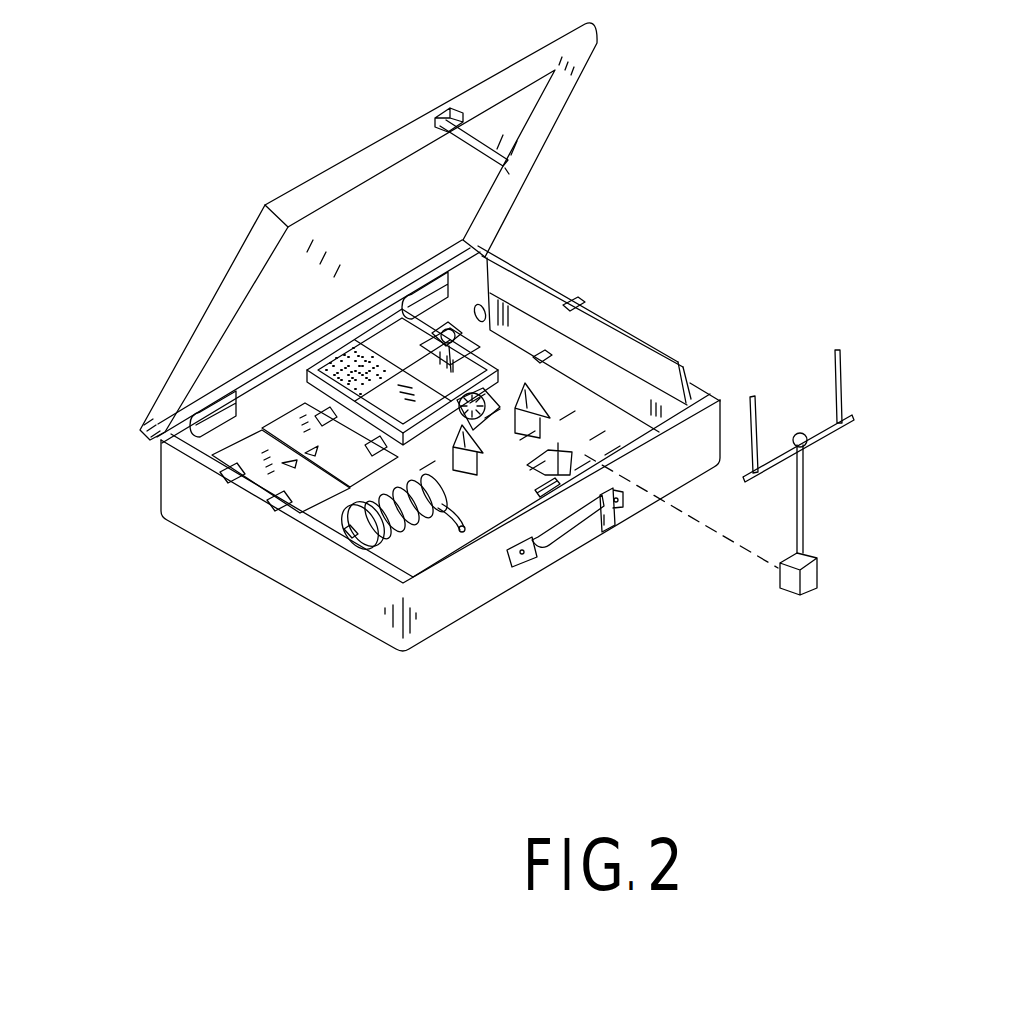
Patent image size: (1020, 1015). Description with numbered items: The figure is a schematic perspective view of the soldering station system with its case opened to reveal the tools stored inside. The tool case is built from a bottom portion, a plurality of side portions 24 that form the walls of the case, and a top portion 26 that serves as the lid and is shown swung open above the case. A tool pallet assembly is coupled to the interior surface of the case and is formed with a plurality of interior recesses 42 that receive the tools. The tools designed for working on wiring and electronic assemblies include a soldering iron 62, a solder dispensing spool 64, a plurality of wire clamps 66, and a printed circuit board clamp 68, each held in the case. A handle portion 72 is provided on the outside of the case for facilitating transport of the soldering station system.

The side portions 24 is at (173, 487).
The top portion 26 is at (223, 292).
The interior recesses 42 is at (567, 449).
The soldering iron 62 is at (470, 338).
The solder dispensing spool 64 is at (378, 518).
The wire clamps 66 is at (478, 452).
The printed circuit board clamp 68 is at (815, 443).
The handle portion 72 is at (597, 538).